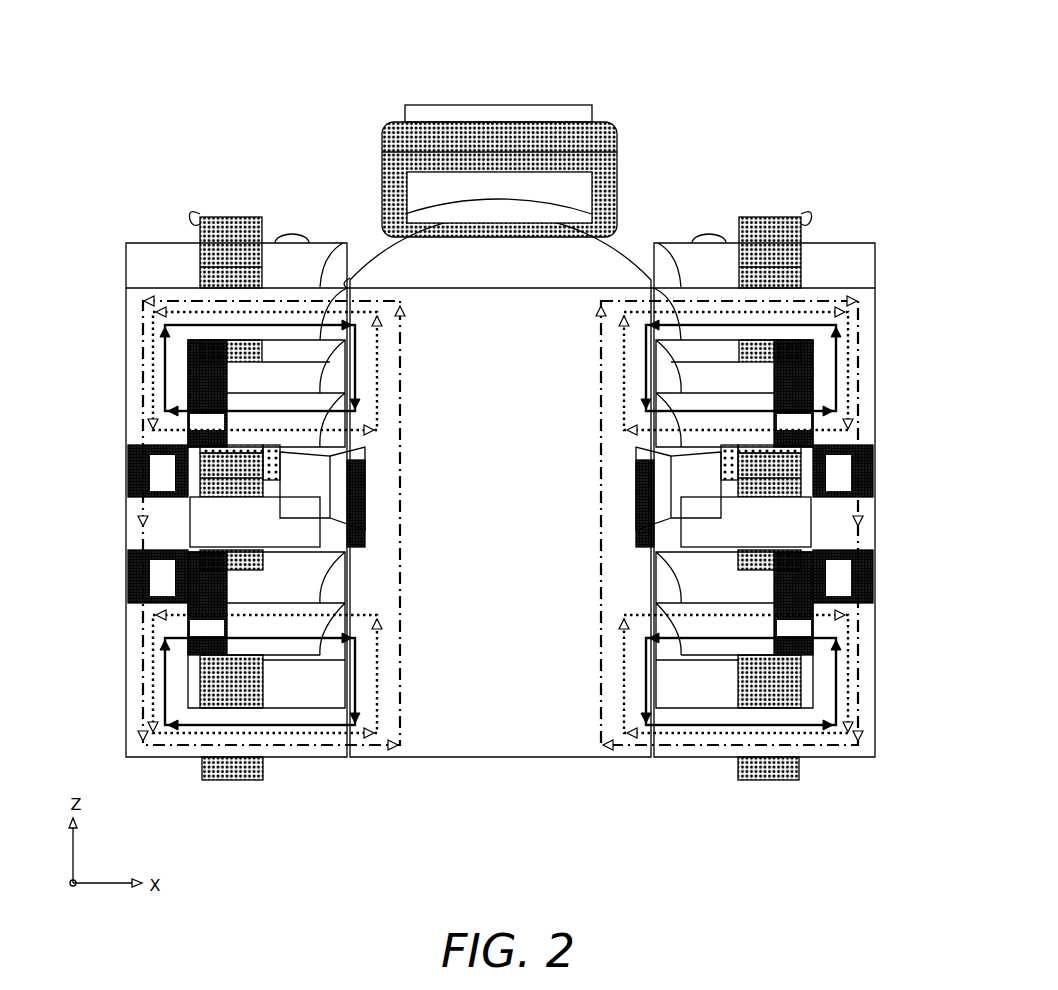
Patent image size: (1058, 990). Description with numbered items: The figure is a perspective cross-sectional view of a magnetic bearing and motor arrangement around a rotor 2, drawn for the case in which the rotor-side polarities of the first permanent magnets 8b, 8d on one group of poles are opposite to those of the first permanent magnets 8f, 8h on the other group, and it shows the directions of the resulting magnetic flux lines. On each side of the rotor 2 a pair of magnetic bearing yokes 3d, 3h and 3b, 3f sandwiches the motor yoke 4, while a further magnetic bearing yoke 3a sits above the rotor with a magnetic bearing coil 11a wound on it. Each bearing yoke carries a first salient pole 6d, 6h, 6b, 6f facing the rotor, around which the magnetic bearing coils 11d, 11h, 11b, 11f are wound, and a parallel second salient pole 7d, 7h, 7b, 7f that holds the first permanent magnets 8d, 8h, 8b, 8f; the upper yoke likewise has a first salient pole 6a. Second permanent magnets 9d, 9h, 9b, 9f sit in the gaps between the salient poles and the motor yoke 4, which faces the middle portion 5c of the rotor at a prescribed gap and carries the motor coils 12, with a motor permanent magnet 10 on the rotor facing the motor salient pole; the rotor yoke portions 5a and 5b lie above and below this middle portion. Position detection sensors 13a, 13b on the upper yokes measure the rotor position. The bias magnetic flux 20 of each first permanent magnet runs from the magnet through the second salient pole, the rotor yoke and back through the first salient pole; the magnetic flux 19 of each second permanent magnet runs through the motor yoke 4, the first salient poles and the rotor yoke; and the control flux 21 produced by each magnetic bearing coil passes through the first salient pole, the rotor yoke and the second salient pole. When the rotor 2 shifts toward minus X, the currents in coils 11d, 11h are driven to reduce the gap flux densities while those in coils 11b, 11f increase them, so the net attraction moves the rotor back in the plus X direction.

The rotor 2 is at (373, 237).
The magnetic bearing yoke 3a is at (578, 105).
The magnetic bearing yoke 3b is at (875, 262).
The magnetic bearing yoke 3d is at (127, 268).
The magnetic bearing yoke 3f is at (875, 748).
The magnetic bearing yoke 3h is at (127, 748).
The motor yoke 4 is at (128, 522).
The rotor yoke portion 5a is at (500, 327).
The rotor yoke portion 5b is at (500, 678).
The middle portion 5c is at (500, 520).
The first salient pole 6a is at (433, 188).
The first salient pole 6b is at (668, 240).
The first salient pole 6d is at (325, 240).
The first salient pole 6f is at (684, 760).
The first salient pole 6h is at (317, 760).
The second salient pole 7b is at (764, 375).
The second salient pole 7d is at (237, 377).
The second salient pole 7f is at (724, 645).
The second salient pole 7h is at (277, 645).
The first permanent magnet 8b is at (776, 363).
The first permanent magnet 8d is at (225, 363).
The first permanent magnet 8f is at (801, 618).
The first permanent magnet 8h is at (200, 618).
The second permanent magnet 9b is at (875, 466).
The second permanent magnet 9d is at (128, 472).
The second permanent magnet 9f is at (875, 573).
The second permanent magnet 9h is at (128, 576).
The motor permanent magnet 10 is at (500, 534).
The magnetic bearing coil 11a is at (478, 140).
The magnetic bearing coil 11b is at (769, 225).
The magnetic bearing coil 11d is at (232, 225).
The magnetic bearing coil 11f is at (764, 781).
The magnetic bearing coil 11h is at (237, 781).
The motor coil 12 is at (215, 552).
The position detection sensor 13a is at (287, 237).
The position detection sensor 13b is at (712, 237).
The magnetic flux 19 is at (143, 311).
The bias magnetic flux 20 is at (153, 330).
The control flux 21 is at (165, 400).